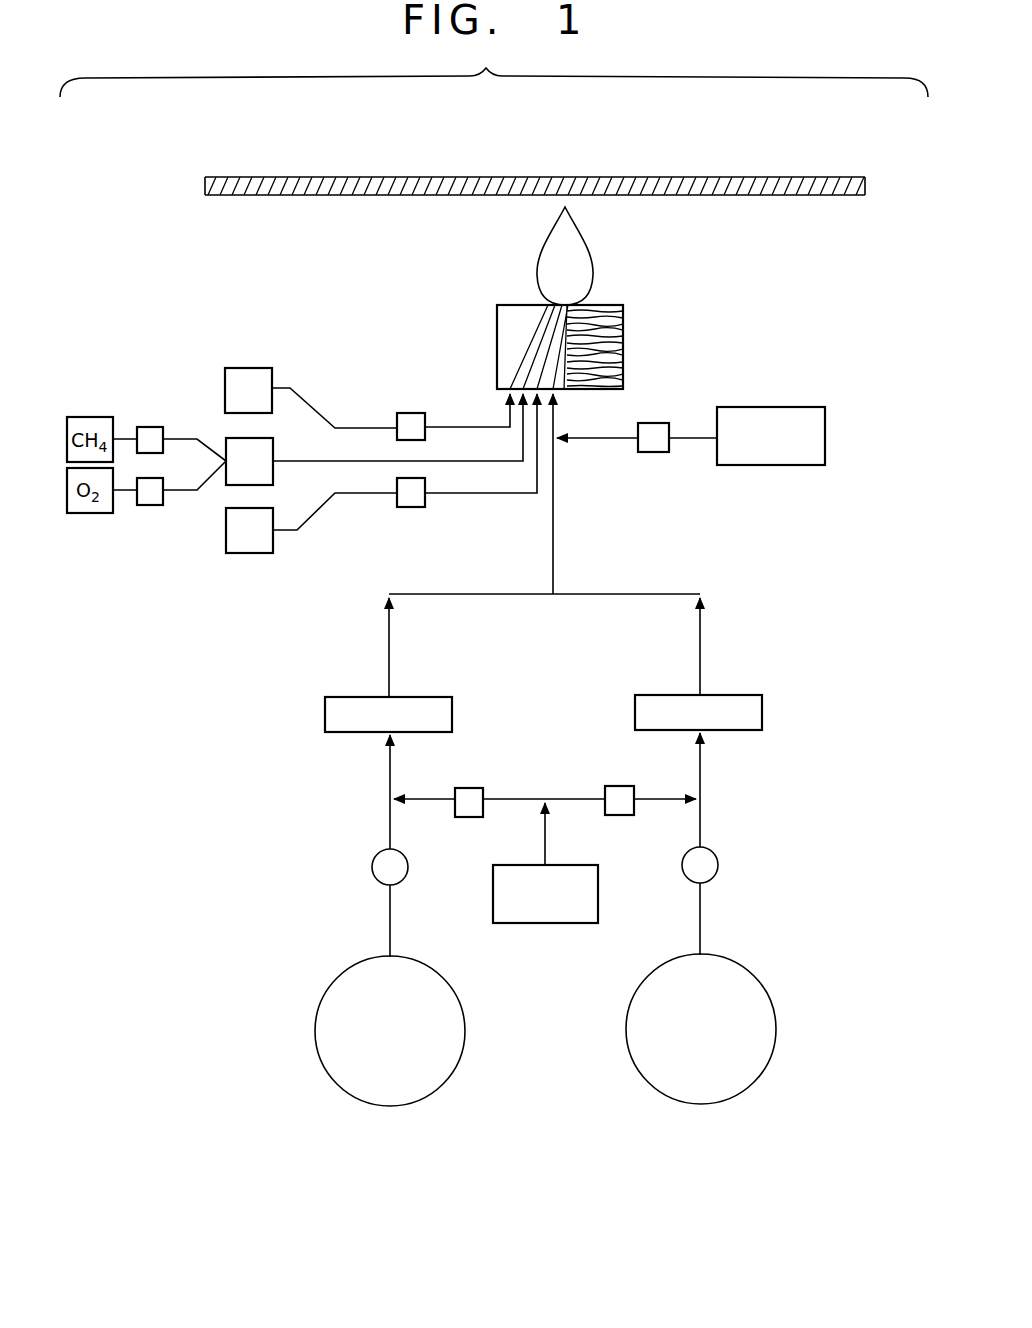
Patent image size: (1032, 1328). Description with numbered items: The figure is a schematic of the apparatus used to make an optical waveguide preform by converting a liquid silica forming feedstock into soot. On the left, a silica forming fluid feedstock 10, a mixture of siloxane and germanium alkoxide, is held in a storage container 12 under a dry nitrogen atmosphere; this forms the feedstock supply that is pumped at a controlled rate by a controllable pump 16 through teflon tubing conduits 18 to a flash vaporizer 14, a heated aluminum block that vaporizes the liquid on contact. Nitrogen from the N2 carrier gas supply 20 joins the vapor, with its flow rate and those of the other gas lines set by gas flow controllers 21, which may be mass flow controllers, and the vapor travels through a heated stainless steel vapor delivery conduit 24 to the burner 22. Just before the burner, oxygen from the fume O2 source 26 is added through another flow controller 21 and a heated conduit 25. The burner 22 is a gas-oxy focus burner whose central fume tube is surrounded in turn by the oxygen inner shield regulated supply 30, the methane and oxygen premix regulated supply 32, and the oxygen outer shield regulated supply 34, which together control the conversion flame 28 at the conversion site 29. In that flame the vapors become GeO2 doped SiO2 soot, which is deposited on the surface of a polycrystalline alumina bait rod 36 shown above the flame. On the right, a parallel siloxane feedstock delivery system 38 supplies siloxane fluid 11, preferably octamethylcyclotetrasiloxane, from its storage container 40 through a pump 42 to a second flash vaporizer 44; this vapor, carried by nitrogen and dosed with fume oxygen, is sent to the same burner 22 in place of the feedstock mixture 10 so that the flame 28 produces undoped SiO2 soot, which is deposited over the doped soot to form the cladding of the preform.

The silica forming fluid feedstock 10 is at (432, 1092).
The siloxane fluid 11 is at (735, 1090).
The storage container 12 is at (399, 1074).
The flash vaporizer 14 is at (325, 713).
The controllable pump 16 is at (372, 867).
The teflon tubing conduits 18 is at (368, 788).
The N2 carrier gas supply 20 is at (545, 925).
The gas flow controllers 21 is at (150, 420).
The burner 22 is at (623, 335).
The vapor delivery conduit 24 is at (485, 585).
The conduit 25 is at (597, 449).
The fume O2 source 26 is at (840, 434).
The conversion site flame 28 is at (520, 250).
The conversion site 29 is at (806, 262).
The oxygen inner shield regulated supply 30 is at (250, 540).
The methane and oxygen premix regulated supply 32 is at (262, 458).
The oxygen outer shield regulated supply 34 is at (250, 380).
The polycrystalline alumina bait rod 36 is at (246, 195).
The siloxane feedstock delivery system 38 is at (769, 650).
The octamethylcyclotetrasiloxane storage container 40 is at (750, 1037).
The pump 42 is at (730, 868).
The flash vaporizer 44 is at (762, 712).